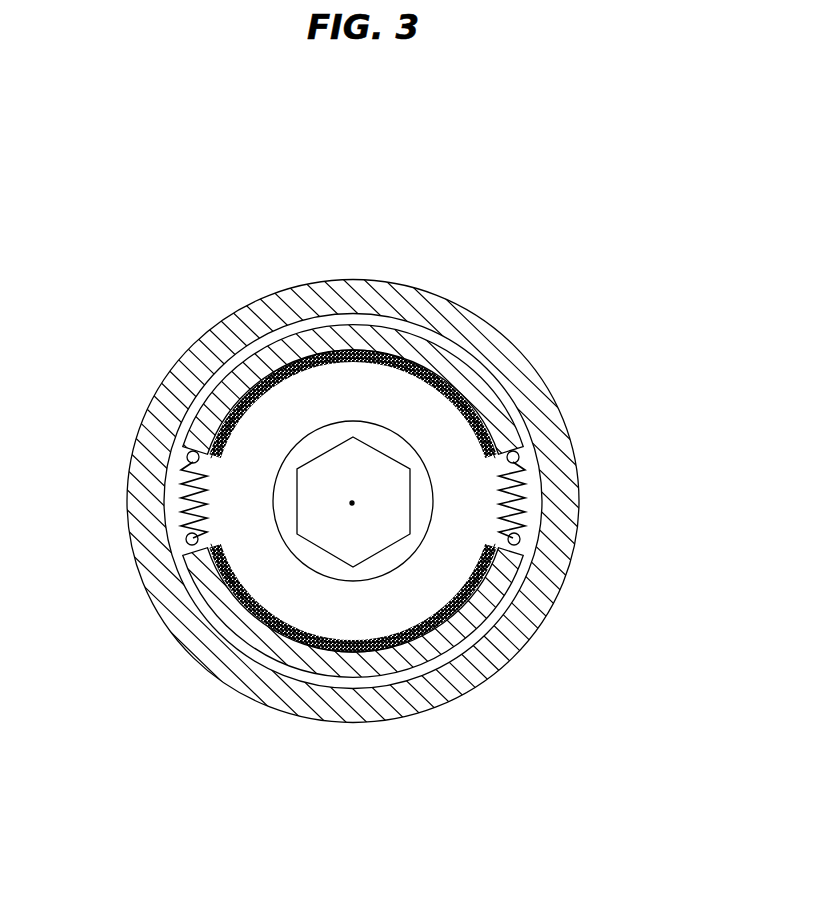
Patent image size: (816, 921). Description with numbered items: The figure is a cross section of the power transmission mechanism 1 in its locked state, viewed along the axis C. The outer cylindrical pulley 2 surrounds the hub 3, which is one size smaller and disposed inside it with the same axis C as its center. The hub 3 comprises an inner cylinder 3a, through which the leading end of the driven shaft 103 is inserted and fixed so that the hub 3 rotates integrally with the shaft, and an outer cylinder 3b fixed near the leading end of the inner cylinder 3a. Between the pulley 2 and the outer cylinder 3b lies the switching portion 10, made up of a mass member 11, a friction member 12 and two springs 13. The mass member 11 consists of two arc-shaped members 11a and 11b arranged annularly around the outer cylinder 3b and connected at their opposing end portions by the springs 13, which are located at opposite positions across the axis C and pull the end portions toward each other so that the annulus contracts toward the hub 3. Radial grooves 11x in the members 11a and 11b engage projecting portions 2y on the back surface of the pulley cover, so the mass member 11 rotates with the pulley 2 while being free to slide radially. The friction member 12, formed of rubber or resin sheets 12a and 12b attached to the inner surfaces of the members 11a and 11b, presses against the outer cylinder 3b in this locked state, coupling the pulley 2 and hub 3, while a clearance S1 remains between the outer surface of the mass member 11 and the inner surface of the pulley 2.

The power transmission mechanism 1 is at (582, 183).
The pulley 2 is at (433, 310).
The projecting portions 2y is at (455, 635).
The hub 3 is at (353, 590).
The inner cylinder 3a is at (326, 567).
The outer cylinder 3b is at (408, 595).
The switching portion 10 is at (234, 239).
The mass member 11 is at (408, 500).
The arc-shaped member 11a is at (498, 409).
The arc-shaped member 11b is at (507, 578).
The grooves 11x is at (457, 385).
The friction member 12 is at (398, 471).
The sheet-shaped member 12a is at (498, 451).
The sheet-shaped member 12b is at (480, 592).
The springs 13 is at (188, 460).
The driven shaft 103 is at (318, 504).
The clearance S1 is at (357, 376).
The axis C is at (360, 489).